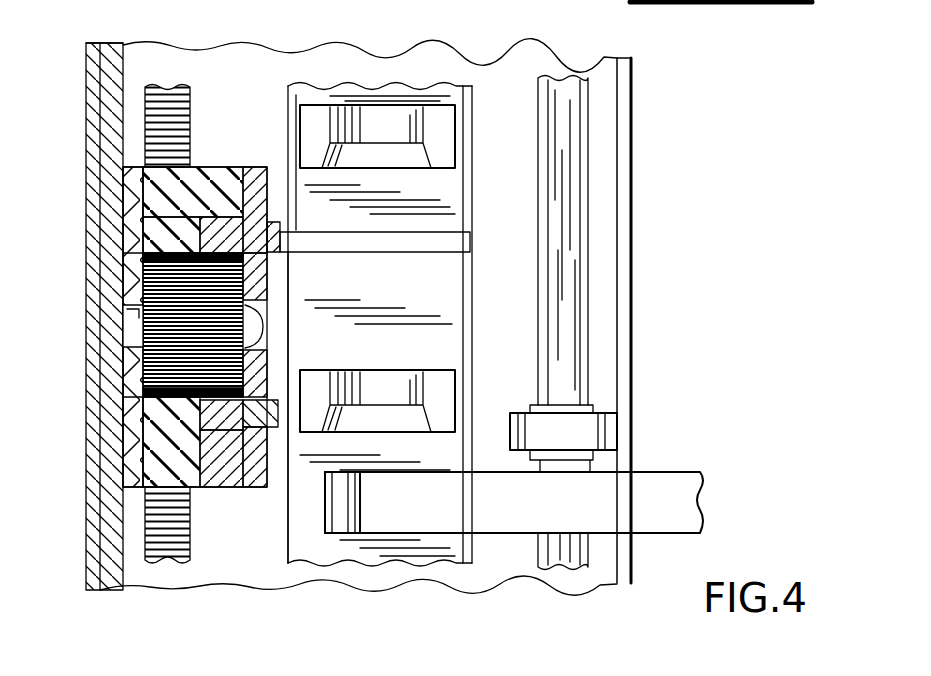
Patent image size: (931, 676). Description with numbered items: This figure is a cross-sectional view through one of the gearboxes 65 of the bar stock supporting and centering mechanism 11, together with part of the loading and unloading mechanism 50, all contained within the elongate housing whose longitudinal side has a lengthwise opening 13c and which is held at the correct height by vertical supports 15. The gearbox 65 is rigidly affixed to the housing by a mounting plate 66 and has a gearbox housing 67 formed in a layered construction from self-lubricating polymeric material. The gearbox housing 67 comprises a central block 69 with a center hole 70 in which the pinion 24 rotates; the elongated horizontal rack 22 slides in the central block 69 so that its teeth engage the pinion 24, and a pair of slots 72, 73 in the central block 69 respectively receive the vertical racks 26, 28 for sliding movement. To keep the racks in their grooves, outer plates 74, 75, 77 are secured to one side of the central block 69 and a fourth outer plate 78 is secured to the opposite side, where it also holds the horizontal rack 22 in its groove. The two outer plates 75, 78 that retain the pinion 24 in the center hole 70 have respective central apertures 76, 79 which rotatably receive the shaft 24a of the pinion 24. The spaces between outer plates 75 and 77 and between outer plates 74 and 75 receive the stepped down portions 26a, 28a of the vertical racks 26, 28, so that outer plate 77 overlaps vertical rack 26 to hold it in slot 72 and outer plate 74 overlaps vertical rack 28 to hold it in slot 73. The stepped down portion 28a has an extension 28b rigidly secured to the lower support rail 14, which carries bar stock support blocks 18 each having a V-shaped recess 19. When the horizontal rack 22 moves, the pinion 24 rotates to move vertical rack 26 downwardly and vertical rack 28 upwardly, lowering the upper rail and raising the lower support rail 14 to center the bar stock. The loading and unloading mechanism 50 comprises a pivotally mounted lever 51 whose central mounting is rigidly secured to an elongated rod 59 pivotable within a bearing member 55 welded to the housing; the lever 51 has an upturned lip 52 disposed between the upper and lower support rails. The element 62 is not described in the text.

The bar stock supporting and centering mechanism 11 is at (483, 101).
The lengthwise opening 13c is at (632, 128).
The lower support rail 14 is at (463, 291).
The vertical supports 15 is at (86, 52).
The bar stock support blocks 18 is at (447, 134).
The V-shaped recess 19 is at (390, 125).
The elongated horizontal rack 22 is at (168, 85).
The pinion 24 is at (245, 276).
The shaft 24a is at (128, 321).
The vertical rack 26 is at (228, 442).
The stepped down portion 26a is at (262, 414).
The vertical rack 28 is at (220, 200).
The stepped down portion 28a is at (284, 240).
The extension 28b is at (403, 250).
The loading and unloading mechanism 50 is at (543, 479).
The pivotally mounted lever 51 is at (572, 523).
The lip 52 is at (352, 500).
The bearing member 55 is at (600, 431).
The elongated rod 59 is at (578, 280).
The top plate 62 is at (748, 6).
The gearbox 65 is at (211, 118).
The mounting plate 66 is at (120, 45).
The gearbox housing 67 is at (147, 450).
The central block 69 is at (140, 460).
The center hole 70 is at (150, 422).
The slot 72 is at (210, 445).
The slot 73 is at (237, 228).
The outer plate 74 is at (270, 184).
The outer plate 75 is at (258, 290).
The central aperture 76 is at (258, 328).
The outer plate 77 is at (257, 483).
The outer plate 78 is at (140, 377).
The central aperture 79 is at (136, 302).